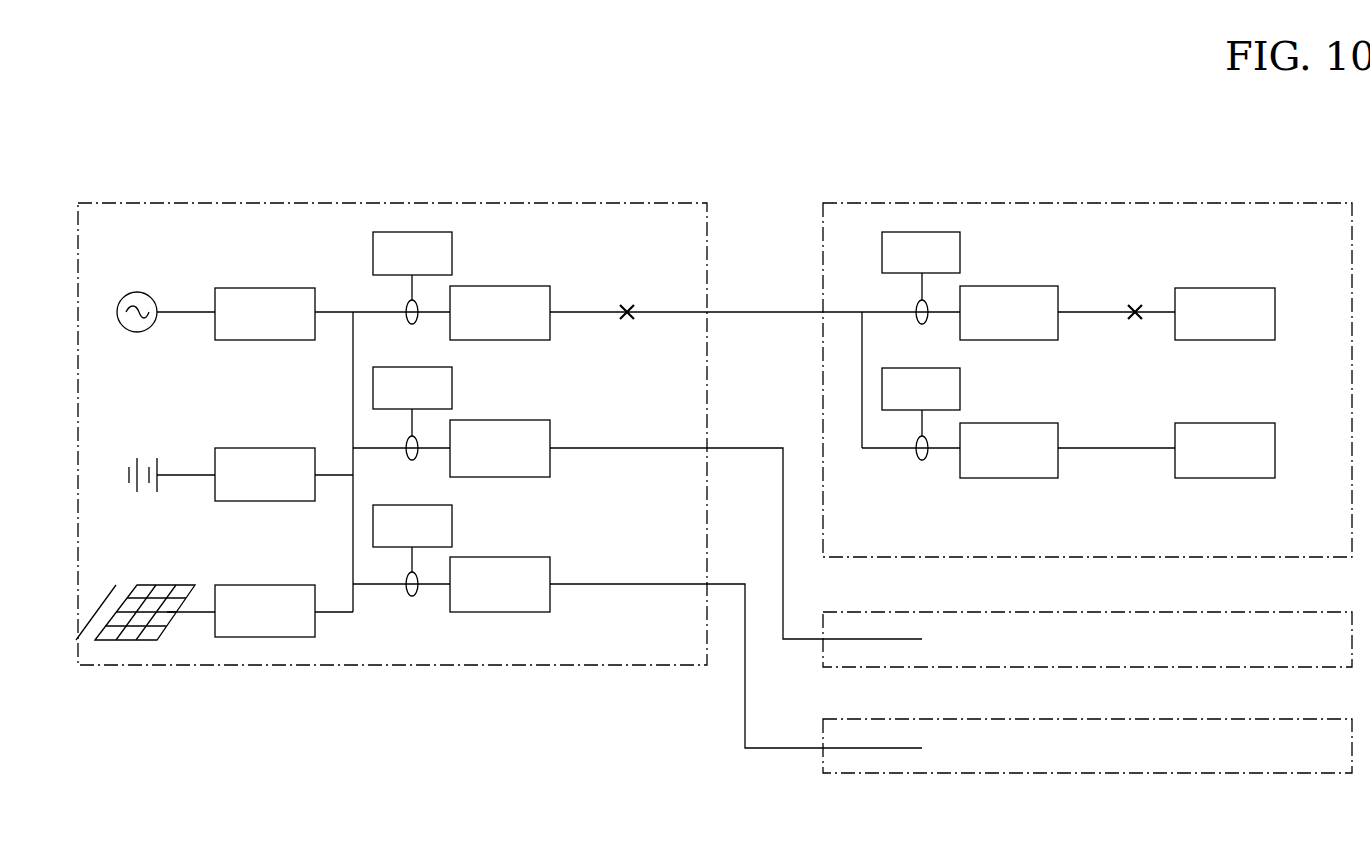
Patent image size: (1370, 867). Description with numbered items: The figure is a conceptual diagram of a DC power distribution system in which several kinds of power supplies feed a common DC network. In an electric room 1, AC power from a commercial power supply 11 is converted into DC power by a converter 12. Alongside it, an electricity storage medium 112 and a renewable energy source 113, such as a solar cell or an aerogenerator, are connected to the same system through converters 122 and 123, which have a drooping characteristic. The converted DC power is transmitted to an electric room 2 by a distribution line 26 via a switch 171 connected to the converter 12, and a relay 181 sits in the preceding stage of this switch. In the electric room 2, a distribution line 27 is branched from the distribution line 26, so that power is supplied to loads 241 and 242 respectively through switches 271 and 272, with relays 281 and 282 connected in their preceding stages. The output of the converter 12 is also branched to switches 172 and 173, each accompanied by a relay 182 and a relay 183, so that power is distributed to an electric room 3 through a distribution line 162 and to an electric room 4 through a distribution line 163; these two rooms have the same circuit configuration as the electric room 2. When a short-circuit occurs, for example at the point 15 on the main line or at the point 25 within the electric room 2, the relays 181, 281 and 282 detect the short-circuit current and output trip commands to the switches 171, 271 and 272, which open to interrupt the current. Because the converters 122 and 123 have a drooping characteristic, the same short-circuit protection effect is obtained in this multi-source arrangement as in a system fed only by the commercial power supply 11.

The electric room 1 is at (683, 203).
The electric room 2 is at (1328, 203).
The electric room 3 is at (1278, 612).
The electric room 4 is at (1263, 719).
The commercial power supply 11 is at (145, 292).
The converter 12 is at (235, 288).
The point 15 is at (632, 298).
The point 25 is at (1137, 298).
The distribution line 26 is at (833, 305).
The distribution line 27 is at (882, 450).
The electricity storage medium 112 is at (150, 432).
The renewable energy 113 is at (145, 585).
The converter 122 is at (237, 448).
The converter 123 is at (237, 585).
The distribution line 162 is at (635, 448).
The distribution line 163 is at (642, 584).
The switch 171 is at (530, 286).
The switch 172 is at (510, 420).
The switch 173 is at (550, 564).
The relay 181 is at (452, 255).
The relay 182 is at (452, 390).
The relay 183 is at (452, 527).
The load 241 is at (1238, 288).
The load 242 is at (1238, 423).
The switch 271 is at (1010, 286).
The switch 272 is at (1018, 423).
The relay 281 is at (960, 250).
The relay 282 is at (960, 390).